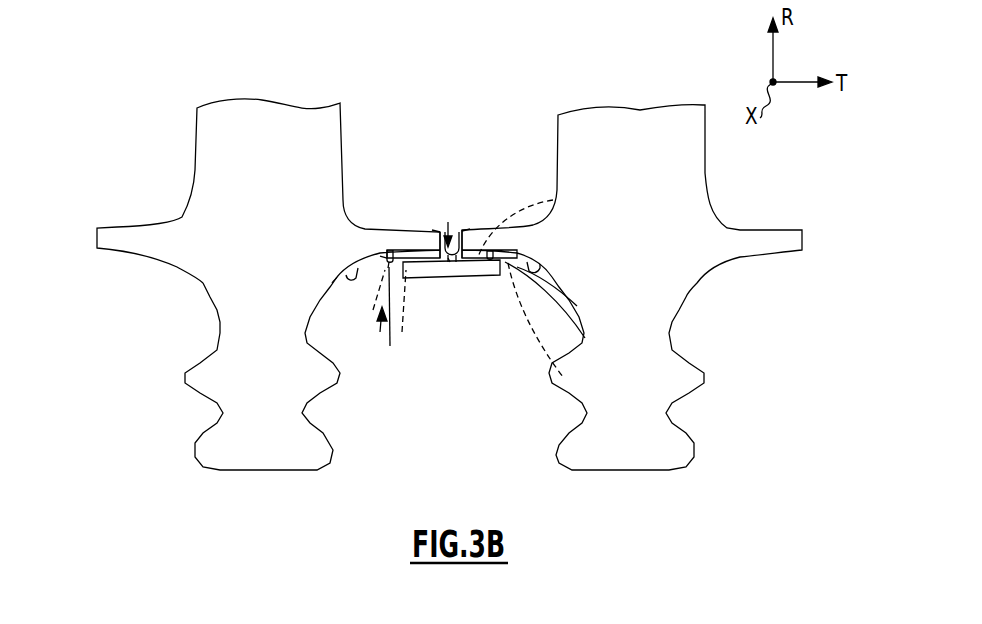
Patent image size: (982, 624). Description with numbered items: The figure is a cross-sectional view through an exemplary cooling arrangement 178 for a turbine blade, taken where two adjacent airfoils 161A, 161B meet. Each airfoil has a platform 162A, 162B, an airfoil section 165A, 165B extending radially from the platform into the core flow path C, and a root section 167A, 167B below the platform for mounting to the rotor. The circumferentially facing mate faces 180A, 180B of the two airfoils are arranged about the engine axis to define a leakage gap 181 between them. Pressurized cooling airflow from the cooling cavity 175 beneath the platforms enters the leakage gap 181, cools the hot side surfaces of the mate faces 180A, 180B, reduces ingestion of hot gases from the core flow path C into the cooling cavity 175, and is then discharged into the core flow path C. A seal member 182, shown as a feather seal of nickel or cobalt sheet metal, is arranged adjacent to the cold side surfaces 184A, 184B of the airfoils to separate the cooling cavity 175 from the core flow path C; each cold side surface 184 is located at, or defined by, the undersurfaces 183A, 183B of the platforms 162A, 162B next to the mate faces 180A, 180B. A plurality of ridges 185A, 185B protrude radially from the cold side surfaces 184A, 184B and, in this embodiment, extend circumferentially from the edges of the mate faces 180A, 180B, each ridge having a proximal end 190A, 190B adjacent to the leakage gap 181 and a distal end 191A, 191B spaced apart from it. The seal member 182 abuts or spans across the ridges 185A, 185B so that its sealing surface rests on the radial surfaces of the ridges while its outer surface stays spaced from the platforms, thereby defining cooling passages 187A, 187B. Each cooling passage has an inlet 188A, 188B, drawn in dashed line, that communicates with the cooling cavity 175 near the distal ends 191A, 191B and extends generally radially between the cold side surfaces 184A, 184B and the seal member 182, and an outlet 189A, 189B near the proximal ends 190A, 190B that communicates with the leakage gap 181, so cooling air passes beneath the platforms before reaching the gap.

The airfoil 161A is at (240, 266).
The airfoil 161B is at (673, 287).
The platform 162A is at (240, 226).
The platform 162B is at (653, 235).
The airfoil section 165A is at (225, 149).
The airfoil section 165B is at (664, 153).
The root section 167A is at (235, 373).
The root section 167B is at (663, 373).
The cooling cavity 175 is at (452, 347).
The cooling arrangement 178 is at (381, 332).
The mate face 180A is at (433, 169).
The mate face 180B is at (503, 213).
The leakage gap 181 is at (449, 188).
The seal member 182 is at (469, 311).
The undersurface 183A is at (310, 250).
The undersurface 183B is at (584, 273).
The cold side surface 184 is at (302, 274).
The cold side surface 184A is at (334, 194).
The cold side surface 184B is at (562, 238).
The ridge 185A is at (419, 323).
The ridge 185B is at (576, 312).
The cooling passage 187A is at (416, 311).
The cooling passage 187B is at (548, 221).
The inlet 188A is at (353, 318).
The inlet 188B is at (568, 332).
The outlet 189A is at (445, 342).
The outlet 189B is at (496, 339).
The proximal end 190A is at (395, 182).
The proximal end 190B is at (503, 181).
The distal end 191A is at (326, 221).
The distal end 191B is at (582, 297).
The core flow path C is at (452, 194).